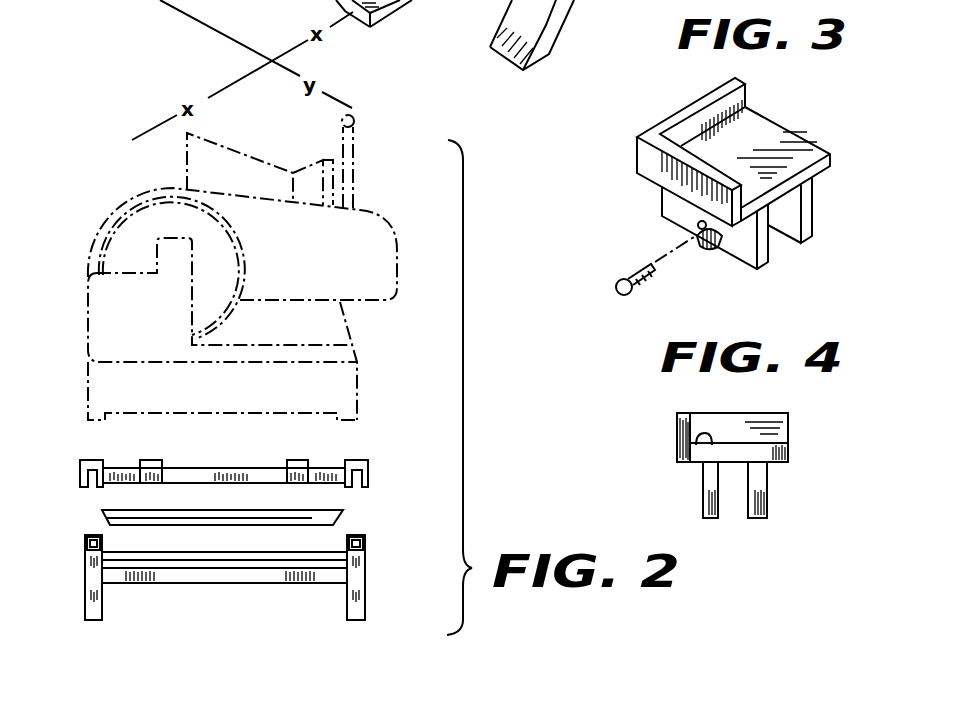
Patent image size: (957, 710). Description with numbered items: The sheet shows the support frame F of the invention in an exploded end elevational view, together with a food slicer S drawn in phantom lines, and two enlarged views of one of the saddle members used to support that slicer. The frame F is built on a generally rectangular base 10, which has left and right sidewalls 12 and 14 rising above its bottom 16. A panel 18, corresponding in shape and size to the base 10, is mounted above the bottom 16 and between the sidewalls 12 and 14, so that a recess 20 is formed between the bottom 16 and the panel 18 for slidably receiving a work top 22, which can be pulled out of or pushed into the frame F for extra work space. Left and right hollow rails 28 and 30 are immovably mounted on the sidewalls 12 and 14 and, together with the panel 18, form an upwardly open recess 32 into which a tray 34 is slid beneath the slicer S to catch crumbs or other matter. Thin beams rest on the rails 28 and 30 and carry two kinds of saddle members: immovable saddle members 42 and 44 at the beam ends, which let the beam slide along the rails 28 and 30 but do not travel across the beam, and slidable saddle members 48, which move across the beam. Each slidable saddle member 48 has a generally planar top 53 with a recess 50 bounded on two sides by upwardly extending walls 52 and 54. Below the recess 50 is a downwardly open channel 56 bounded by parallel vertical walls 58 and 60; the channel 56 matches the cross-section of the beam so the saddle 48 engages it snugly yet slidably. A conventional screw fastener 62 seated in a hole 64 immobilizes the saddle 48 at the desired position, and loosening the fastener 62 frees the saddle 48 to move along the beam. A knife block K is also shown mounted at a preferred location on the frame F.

In FIG. 2, the base 10 is at (260, 311).
In FIG. 2, the left sidewall 12 is at (84, 560).
In FIG. 2, the right sidewall 14 is at (367, 571).
In FIG. 2, the bottom 16 is at (224, 572).
In FIG. 2, the panel 18 is at (163, 551).
In FIG. 2, the recess 20 is at (277, 561).
In FIG. 2, the work top 22 is at (324, 13).
In FIG. 2, the left rail 28 is at (92, 534).
In FIG. 2, the right rail 30 is at (366, 544).
In FIG. 2, the upwardly open recess 32 is at (340, 540).
In FIG. 2, the tray 34 is at (343, 511).
In FIG. 2, the immovable saddle member 42 is at (86, 458).
In FIG. 2, the immovable saddle member 44 is at (367, 463).
In FIG. 2, the slidable saddle member 48 is at (150, 460).
In FIG. 3, the slidable saddle member 48 is at (713, 202).
In FIG. 4, the slidable saddle member 48 is at (716, 481).
In FIG. 3, the recess 50 is at (762, 126).
In FIG. 4, the recess 50 is at (790, 438).
In FIG. 3, the upwardly extending wall 52 is at (700, 115).
In FIG. 4, the upwardly extending wall 52 is at (725, 430).
In FIG. 3, the planar top 53 is at (748, 145).
In FIG. 4, the planar top 53 is at (705, 443).
In FIG. 3, the upwardly extending wall 54 is at (635, 152).
In FIG. 4, the upwardly extending wall 54 is at (678, 446).
In FIG. 3, the downwardly open channel 56 is at (782, 252).
In FIG. 4, the downwardly open channel 56 is at (733, 520).
In FIG. 3, the vertical wall 58 is at (745, 262).
In FIG. 4, the vertical wall 58 is at (700, 494).
In FIG. 3, the vertical wall 60 is at (812, 228).
In FIG. 4, the vertical wall 60 is at (768, 505).
In FIG. 3, the screw fastener 62 is at (645, 290).
In FIG. 3, the hole 64 is at (720, 240).
In FIG. 2, the slicer S is at (399, 247).
In FIG. 2, the support frame F is at (378, 428).
In FIG. 2, the knife block K is at (552, 40).